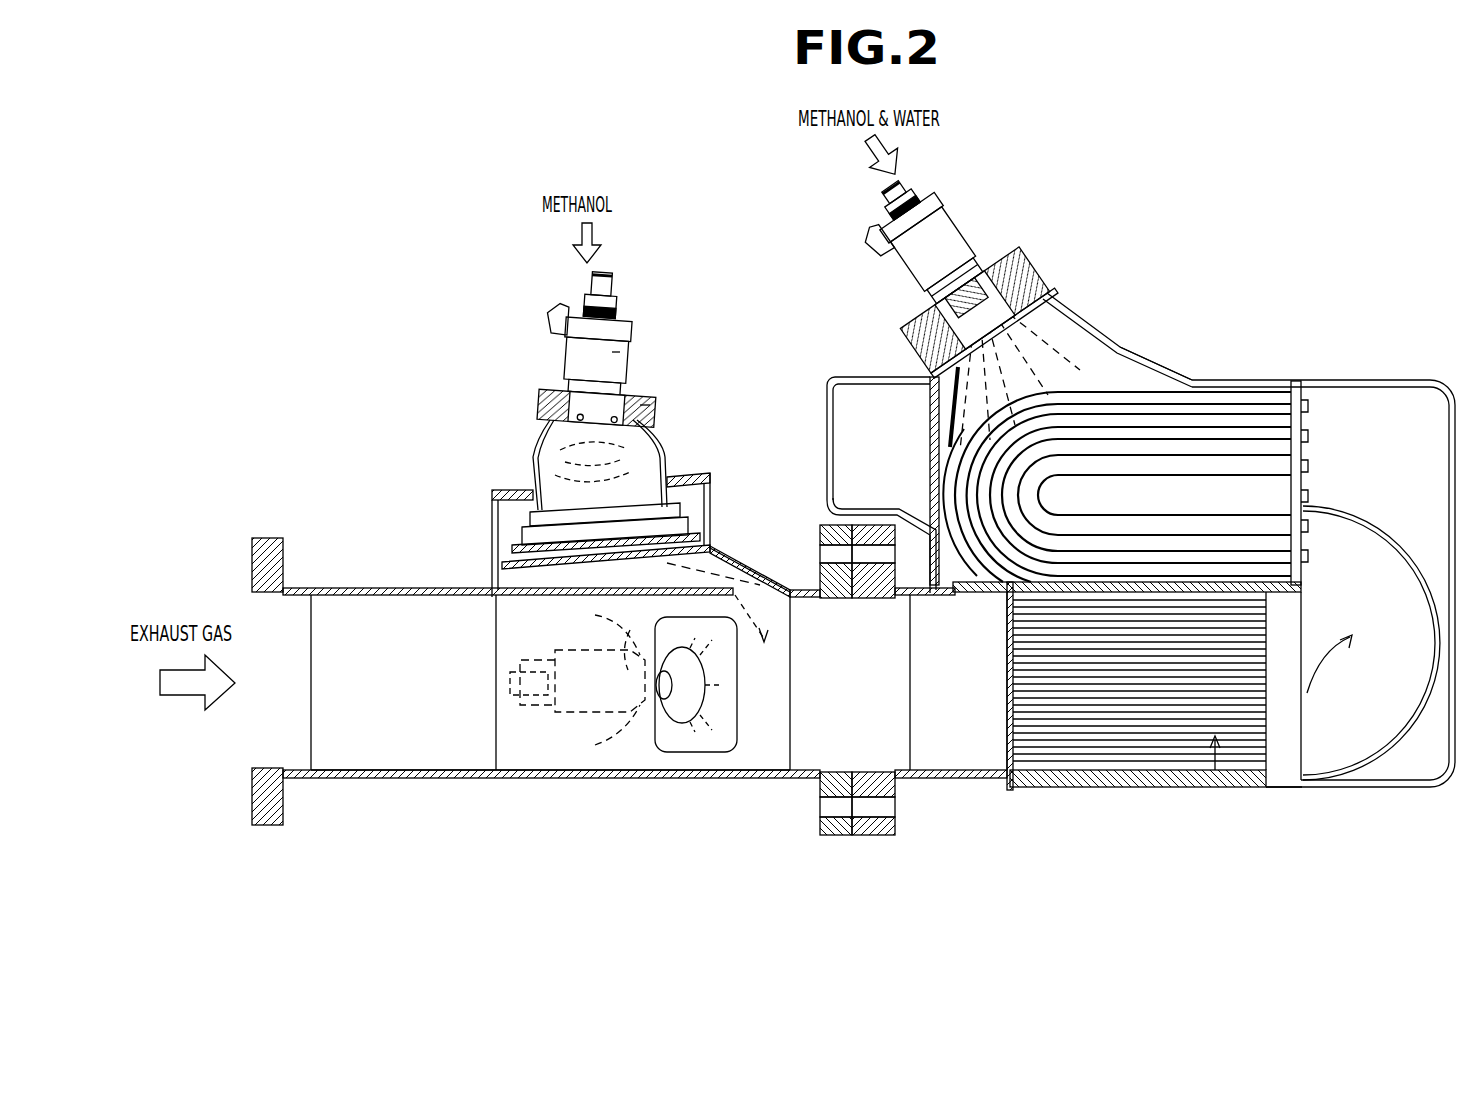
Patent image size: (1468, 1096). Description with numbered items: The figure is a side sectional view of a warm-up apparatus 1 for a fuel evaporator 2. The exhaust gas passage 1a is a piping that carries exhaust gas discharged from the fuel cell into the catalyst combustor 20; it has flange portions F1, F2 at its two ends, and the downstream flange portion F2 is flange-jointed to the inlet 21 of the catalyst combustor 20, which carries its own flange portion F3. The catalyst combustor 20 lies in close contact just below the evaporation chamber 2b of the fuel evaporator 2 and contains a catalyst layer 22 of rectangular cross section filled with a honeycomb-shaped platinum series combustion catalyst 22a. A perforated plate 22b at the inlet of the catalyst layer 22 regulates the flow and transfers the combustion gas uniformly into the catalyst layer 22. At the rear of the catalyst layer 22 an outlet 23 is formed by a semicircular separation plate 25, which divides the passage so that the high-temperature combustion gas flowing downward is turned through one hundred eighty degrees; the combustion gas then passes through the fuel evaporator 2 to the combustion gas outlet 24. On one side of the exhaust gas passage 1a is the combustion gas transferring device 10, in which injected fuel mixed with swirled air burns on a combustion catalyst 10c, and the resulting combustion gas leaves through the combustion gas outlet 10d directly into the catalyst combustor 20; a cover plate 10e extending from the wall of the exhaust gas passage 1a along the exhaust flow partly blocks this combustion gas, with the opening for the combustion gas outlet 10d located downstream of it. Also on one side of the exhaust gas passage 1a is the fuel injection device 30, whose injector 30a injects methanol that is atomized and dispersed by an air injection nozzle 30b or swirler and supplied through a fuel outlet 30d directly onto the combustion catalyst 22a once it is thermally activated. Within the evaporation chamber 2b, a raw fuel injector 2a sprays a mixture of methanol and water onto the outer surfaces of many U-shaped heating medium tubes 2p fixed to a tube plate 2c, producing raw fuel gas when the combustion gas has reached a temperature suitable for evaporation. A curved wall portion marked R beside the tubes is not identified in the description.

The warm-up apparatus 1 is at (428, 850).
The exhaust gas passage 1a is at (545, 782).
The fuel evaporator 2 is at (1141, 494).
The raw fuel injector 2a is at (950, 245).
The evaporation chamber 2b is at (1130, 342).
The tube plate 2c is at (1296, 380).
The heating medium tubes 2p is at (1092, 440).
The combustion gas transferring device 10 is at (575, 353).
The combustion catalyst 10c is at (705, 515).
The combustion gas outlet 10d is at (775, 597).
The cover plate 10e is at (555, 572).
The catalyst combustor 20 is at (1127, 765).
The inlet 21 is at (945, 765).
The catalyst layer 22 is at (1127, 727).
The combustion catalyst 22a is at (1085, 765).
The perforated plate 22b is at (1005, 745).
The outlet 23 is at (1365, 742).
The combustion gas outlet 24 is at (880, 385).
The separation plate 25 is at (1392, 547).
The fuel injection device 30 is at (648, 756).
The injector 30a is at (596, 745).
The air injection nozzle 30b is at (596, 615).
The fuel outlet 30d is at (697, 755).
The flange portion F1 is at (267, 538).
The flange portion F2 is at (840, 535).
The flange portion F3 is at (870, 535).
The curved guide wall R is at (953, 455).